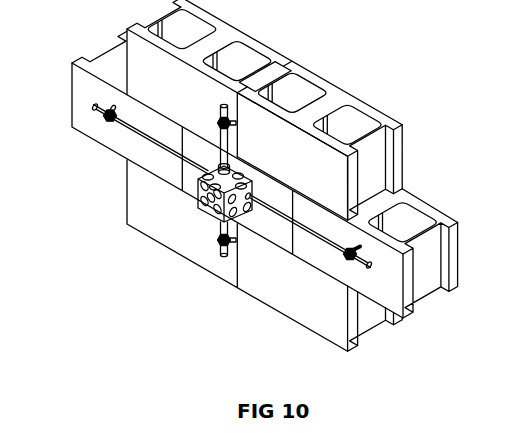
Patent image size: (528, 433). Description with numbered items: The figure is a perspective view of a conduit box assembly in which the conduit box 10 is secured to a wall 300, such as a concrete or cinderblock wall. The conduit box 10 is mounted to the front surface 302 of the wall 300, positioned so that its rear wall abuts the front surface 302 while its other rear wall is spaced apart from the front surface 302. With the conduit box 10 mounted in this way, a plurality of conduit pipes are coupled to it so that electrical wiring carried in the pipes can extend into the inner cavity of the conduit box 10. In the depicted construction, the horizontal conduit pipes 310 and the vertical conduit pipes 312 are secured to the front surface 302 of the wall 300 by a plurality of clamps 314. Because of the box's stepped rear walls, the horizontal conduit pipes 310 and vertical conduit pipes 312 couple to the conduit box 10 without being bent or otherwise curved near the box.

The conduit box 10 is at (251, 179).
The wall 300 is at (268, 175).
The front surface 302 is at (331, 163).
The horizontal conduit pipes 310 is at (140, 136).
The vertical conduit pipes 312 is at (220, 107).
The clamps 314 is at (233, 123).